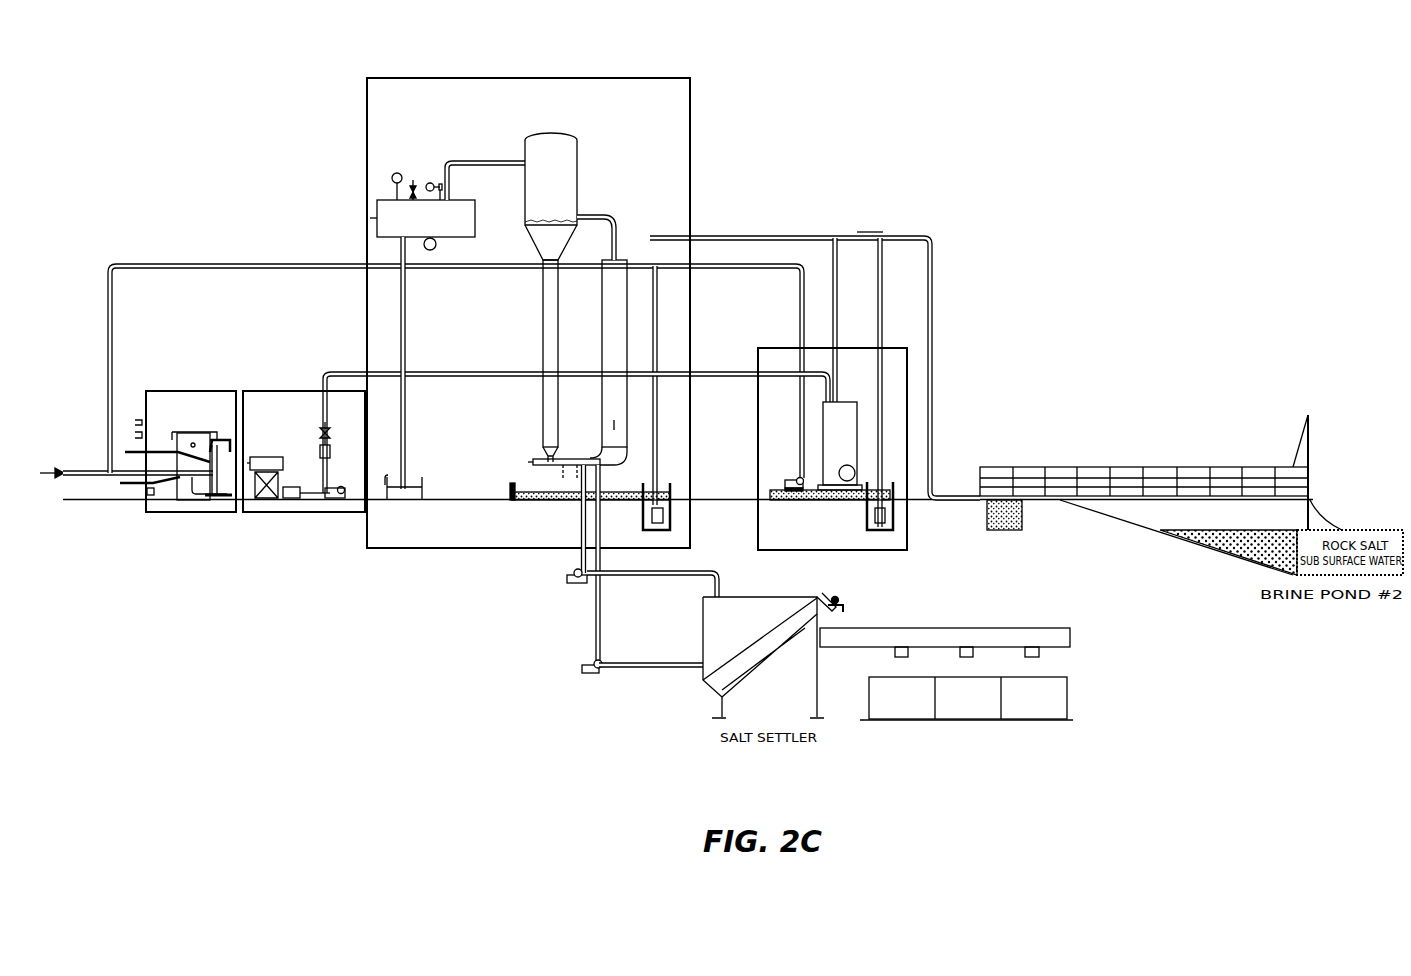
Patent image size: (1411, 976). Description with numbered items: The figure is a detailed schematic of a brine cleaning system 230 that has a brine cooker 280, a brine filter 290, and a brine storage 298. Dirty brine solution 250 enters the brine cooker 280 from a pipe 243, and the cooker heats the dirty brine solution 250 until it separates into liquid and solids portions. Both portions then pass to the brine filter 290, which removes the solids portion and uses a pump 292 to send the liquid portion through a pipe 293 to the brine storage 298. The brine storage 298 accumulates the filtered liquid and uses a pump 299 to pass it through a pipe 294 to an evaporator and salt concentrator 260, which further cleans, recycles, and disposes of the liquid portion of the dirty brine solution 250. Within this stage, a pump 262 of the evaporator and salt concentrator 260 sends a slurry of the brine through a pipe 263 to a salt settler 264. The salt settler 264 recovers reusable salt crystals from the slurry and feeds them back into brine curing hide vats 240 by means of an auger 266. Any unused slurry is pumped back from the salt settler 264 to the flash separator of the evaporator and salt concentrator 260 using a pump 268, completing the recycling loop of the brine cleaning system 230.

The brine cleaning system 230 is at (1187, 135).
The brine curing hide vats 240 is at (1067, 697).
The pipe 243 is at (87, 468).
The dirty brine solution 250 is at (40, 472).
The evaporator and salt concentrator 260 is at (690, 148).
The pump 262 is at (565, 582).
The pipe 263 is at (645, 575).
The salt settler 264 is at (830, 597).
The auger 266 is at (1027, 632).
The pump 268 is at (582, 673).
The brine cooker 280 is at (198, 390).
The brine filter 290 is at (276, 390).
The pump 292 is at (340, 505).
The pipe 293 is at (472, 378).
The pipe 294 is at (786, 262).
The brine storage 298 is at (907, 368).
The pump 299 is at (790, 478).